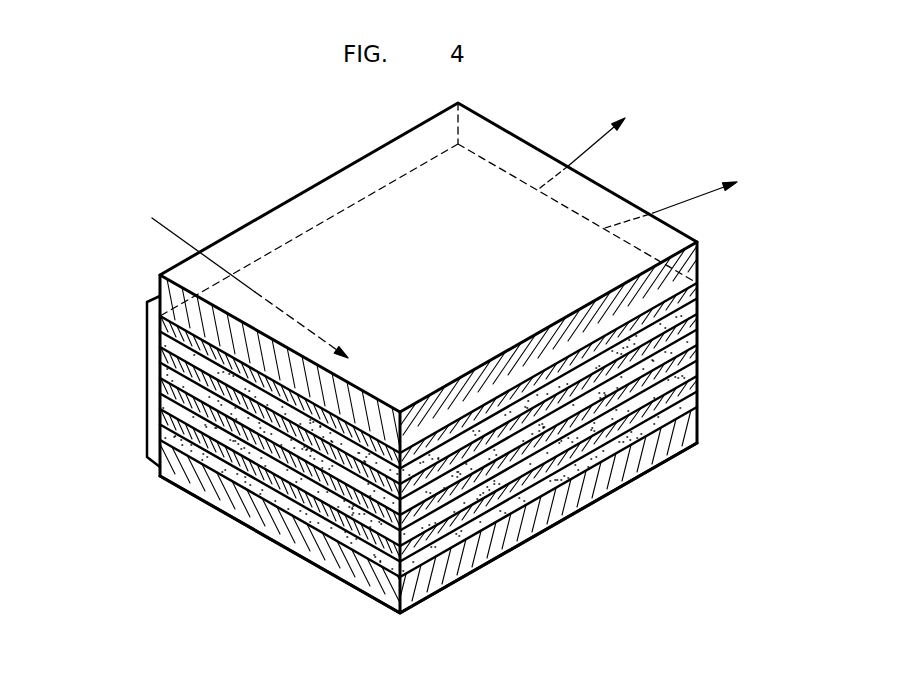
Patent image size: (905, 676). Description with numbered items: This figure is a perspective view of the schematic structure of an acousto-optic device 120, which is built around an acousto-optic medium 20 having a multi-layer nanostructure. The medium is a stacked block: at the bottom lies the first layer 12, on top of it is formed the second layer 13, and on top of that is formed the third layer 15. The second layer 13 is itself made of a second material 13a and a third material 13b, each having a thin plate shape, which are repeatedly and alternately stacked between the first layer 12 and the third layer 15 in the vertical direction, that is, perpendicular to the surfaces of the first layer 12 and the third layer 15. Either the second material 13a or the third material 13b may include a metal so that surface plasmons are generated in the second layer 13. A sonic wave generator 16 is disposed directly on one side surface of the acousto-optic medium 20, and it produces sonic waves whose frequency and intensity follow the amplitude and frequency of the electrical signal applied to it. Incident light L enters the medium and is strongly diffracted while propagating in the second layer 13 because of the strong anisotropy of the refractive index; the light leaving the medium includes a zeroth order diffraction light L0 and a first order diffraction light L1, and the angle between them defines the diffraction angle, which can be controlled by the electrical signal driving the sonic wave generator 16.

The acousto-optic device 120 is at (80, 456).
The acousto-optic medium 20 is at (240, 545).
The third layer 15 is at (697, 263).
The second layer 13 is at (706, 283).
The second material 13a is at (362, 543).
The third material 13b is at (335, 512).
The first layer 12 is at (697, 423).
The sonic wave generator 16 is at (148, 375).
The light L is at (180, 238).
The 0th order diffraction light L0 is at (688, 205).
The 1st order diffraction light L1 is at (592, 147).